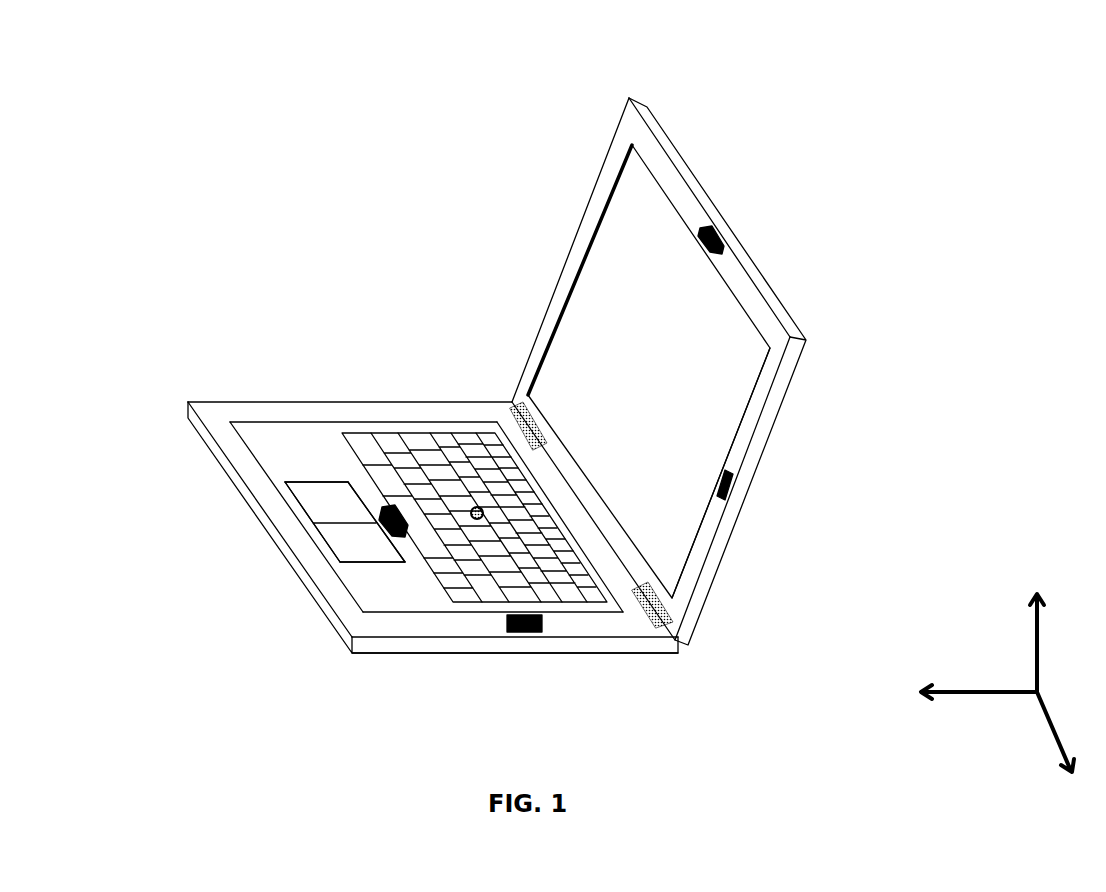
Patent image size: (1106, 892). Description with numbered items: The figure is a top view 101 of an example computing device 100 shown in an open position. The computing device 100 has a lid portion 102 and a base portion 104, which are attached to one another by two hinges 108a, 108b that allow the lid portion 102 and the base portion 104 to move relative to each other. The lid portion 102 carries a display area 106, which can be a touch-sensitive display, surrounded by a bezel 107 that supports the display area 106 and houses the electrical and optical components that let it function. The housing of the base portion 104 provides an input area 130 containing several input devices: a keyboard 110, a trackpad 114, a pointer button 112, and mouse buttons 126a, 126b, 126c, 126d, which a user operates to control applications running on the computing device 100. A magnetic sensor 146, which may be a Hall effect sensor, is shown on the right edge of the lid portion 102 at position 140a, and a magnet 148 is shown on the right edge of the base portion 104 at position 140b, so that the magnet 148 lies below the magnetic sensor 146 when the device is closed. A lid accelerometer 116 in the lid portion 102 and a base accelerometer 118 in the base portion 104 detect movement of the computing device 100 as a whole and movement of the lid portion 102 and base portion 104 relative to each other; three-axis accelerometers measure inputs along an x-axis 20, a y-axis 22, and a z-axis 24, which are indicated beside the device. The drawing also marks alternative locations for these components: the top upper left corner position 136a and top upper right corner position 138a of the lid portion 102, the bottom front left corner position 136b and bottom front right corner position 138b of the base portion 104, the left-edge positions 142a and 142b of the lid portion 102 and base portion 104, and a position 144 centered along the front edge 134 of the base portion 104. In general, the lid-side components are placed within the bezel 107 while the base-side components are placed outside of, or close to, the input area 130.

The computing device 100 is at (908, 103).
The top view 101 is at (330, 70).
The lid portion 102 is at (788, 370).
The base portion 104 is at (628, 648).
The display area 106 is at (649, 371).
The bezel 107 is at (602, 188).
The hinge 108a is at (668, 612).
The hinge 108b is at (525, 418).
The keyboard 110 is at (573, 607).
The pointer button 112 is at (430, 424).
The trackpad 114 is at (363, 550).
The lid accelerometer 116 is at (713, 237).
The base accelerometer 118 is at (399, 541).
The mouse button 126a is at (299, 488).
The mouse button 126b is at (352, 487).
The mouse button 126c is at (340, 557).
The mouse button 126d is at (402, 556).
The input area 130 is at (602, 623).
The front edge 134 is at (267, 520).
The position 136a is at (630, 123).
The position 136b is at (212, 412).
The position 138a is at (772, 325).
The position 138b is at (365, 625).
The position 140a is at (743, 447).
The position 140b is at (485, 638).
The position 142a is at (577, 252).
The position 142b is at (373, 410).
The position 144 is at (291, 527).
The magnetic sensor 146 is at (732, 487).
The magnet 148 is at (522, 633).
The x-axis 20 is at (1052, 727).
The y-axis 22 is at (1038, 648).
The z-axis 24 is at (987, 688).